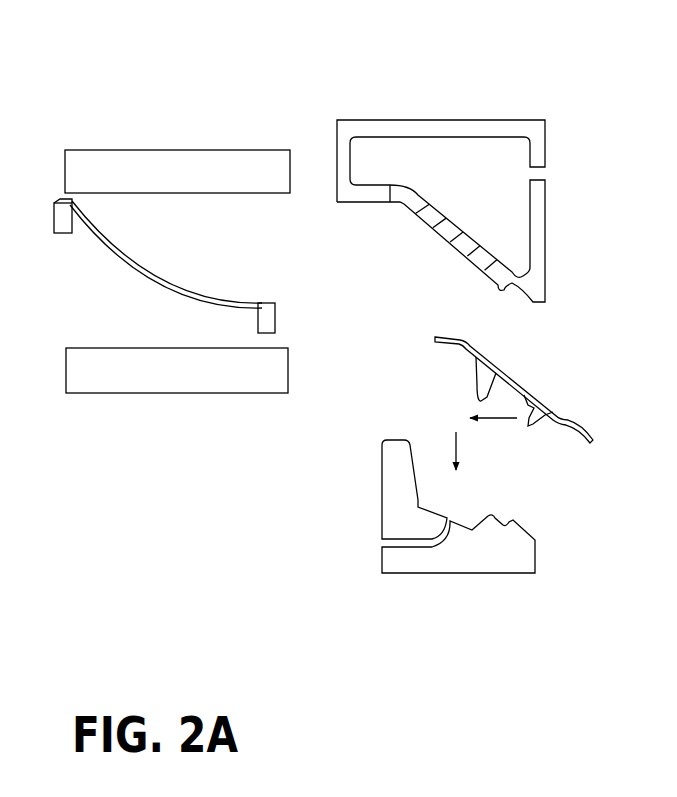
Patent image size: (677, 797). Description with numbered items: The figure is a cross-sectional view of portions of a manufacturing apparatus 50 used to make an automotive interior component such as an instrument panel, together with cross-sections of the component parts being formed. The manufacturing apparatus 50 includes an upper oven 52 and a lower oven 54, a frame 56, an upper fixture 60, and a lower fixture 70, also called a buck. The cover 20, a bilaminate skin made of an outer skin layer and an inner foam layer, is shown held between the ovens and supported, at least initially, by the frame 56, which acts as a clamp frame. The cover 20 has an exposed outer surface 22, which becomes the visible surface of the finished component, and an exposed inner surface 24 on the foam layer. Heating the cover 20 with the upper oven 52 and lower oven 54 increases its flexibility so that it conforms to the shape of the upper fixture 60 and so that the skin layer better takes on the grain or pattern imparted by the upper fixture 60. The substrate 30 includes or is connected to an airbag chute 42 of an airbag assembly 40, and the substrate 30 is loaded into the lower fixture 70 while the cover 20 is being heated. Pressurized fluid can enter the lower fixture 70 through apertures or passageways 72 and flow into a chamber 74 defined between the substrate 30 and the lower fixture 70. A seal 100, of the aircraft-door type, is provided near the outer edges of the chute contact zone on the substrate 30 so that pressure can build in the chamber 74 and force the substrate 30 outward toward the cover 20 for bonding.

The upper oven 52 is at (118, 147).
The lower oven 54 is at (128, 398).
The cover 20 is at (178, 264).
The outer surface 22 is at (197, 290).
The inner surface 24 is at (123, 263).
The frame 56 is at (65, 233).
The manufacturing apparatus 50 is at (467, 168).
The upper fixture 60 is at (427, 120).
The substrate 30 is at (502, 399).
The airbag assembly 40 is at (537, 432).
The airbag chute 42 is at (478, 377).
The lower fixture 70 is at (434, 526).
The apertures/passageways 72 is at (373, 548).
The chamber 74 is at (413, 497).
The seal 100 is at (403, 440).